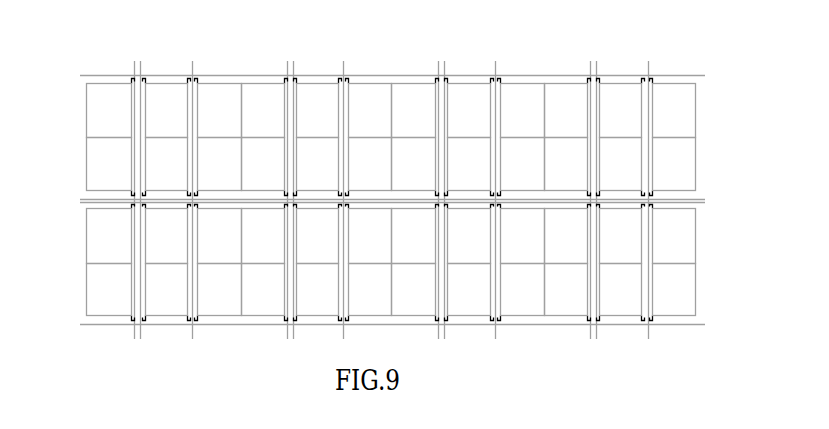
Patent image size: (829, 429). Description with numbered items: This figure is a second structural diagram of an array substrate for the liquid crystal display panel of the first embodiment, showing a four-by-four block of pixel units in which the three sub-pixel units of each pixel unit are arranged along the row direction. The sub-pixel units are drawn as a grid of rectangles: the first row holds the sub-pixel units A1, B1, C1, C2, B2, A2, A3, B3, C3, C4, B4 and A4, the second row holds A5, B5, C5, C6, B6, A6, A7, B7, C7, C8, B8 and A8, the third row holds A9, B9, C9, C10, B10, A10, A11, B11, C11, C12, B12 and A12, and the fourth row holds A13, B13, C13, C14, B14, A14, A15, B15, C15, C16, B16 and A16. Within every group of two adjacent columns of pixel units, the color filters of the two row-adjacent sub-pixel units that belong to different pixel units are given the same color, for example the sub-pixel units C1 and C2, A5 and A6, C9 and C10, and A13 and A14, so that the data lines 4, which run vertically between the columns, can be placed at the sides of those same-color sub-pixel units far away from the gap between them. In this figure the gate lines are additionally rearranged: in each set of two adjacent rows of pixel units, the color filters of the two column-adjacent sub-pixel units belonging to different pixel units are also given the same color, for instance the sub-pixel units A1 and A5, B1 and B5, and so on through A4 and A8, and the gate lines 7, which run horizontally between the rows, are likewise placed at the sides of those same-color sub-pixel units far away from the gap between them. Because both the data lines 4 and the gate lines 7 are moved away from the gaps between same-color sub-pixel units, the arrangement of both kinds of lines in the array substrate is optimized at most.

The data line 4 is at (287, 60).
The gate line 7 is at (87, 194).
The sub-pixel unit A1 is at (109, 111).
The sub-pixel unit A5 is at (109, 164).
The sub-pixel unit A9 is at (109, 236).
The sub-pixel unit A13 is at (109, 290).
The sub-pixel unit B1 is at (167, 111).
The sub-pixel unit B5 is at (167, 164).
The sub-pixel unit B9 is at (167, 236).
The sub-pixel unit B13 is at (167, 290).
The sub-pixel unit C1 is at (220, 111).
The sub-pixel unit C5 is at (220, 164).
The sub-pixel unit C9 is at (220, 236).
The sub-pixel unit C13 is at (220, 290).
The sub-pixel unit C2 is at (263, 111).
The sub-pixel unit C6 is at (263, 164).
The sub-pixel unit C10 is at (263, 236).
The sub-pixel unit C14 is at (263, 290).
The sub-pixel unit B2 is at (318, 111).
The sub-pixel unit B6 is at (318, 164).
The sub-pixel unit B10 is at (318, 236).
The sub-pixel unit B14 is at (318, 290).
The sub-pixel unit A2 is at (370, 111).
The sub-pixel unit A6 is at (370, 164).
The sub-pixel unit A10 is at (370, 236).
The sub-pixel unit A14 is at (370, 290).
The sub-pixel unit A3 is at (414, 111).
The sub-pixel unit A7 is at (414, 164).
The sub-pixel unit A11 is at (414, 236).
The sub-pixel unit A15 is at (414, 290).
The sub-pixel unit B3 is at (469, 111).
The sub-pixel unit B7 is at (469, 164).
The sub-pixel unit B11 is at (469, 236).
The sub-pixel unit B15 is at (469, 290).
The sub-pixel unit C3 is at (523, 111).
The sub-pixel unit C7 is at (523, 164).
The sub-pixel unit C11 is at (523, 236).
The sub-pixel unit C15 is at (523, 290).
The sub-pixel unit C4 is at (566, 111).
The sub-pixel unit C8 is at (566, 164).
The sub-pixel unit C12 is at (566, 236).
The sub-pixel unit C16 is at (566, 290).
The sub-pixel unit B4 is at (621, 111).
The sub-pixel unit B8 is at (621, 164).
The sub-pixel unit B12 is at (621, 236).
The sub-pixel unit B16 is at (621, 290).
The sub-pixel unit A4 is at (674, 111).
The sub-pixel unit A8 is at (674, 164).
The sub-pixel unit A12 is at (674, 236).
The sub-pixel unit A16 is at (674, 290).